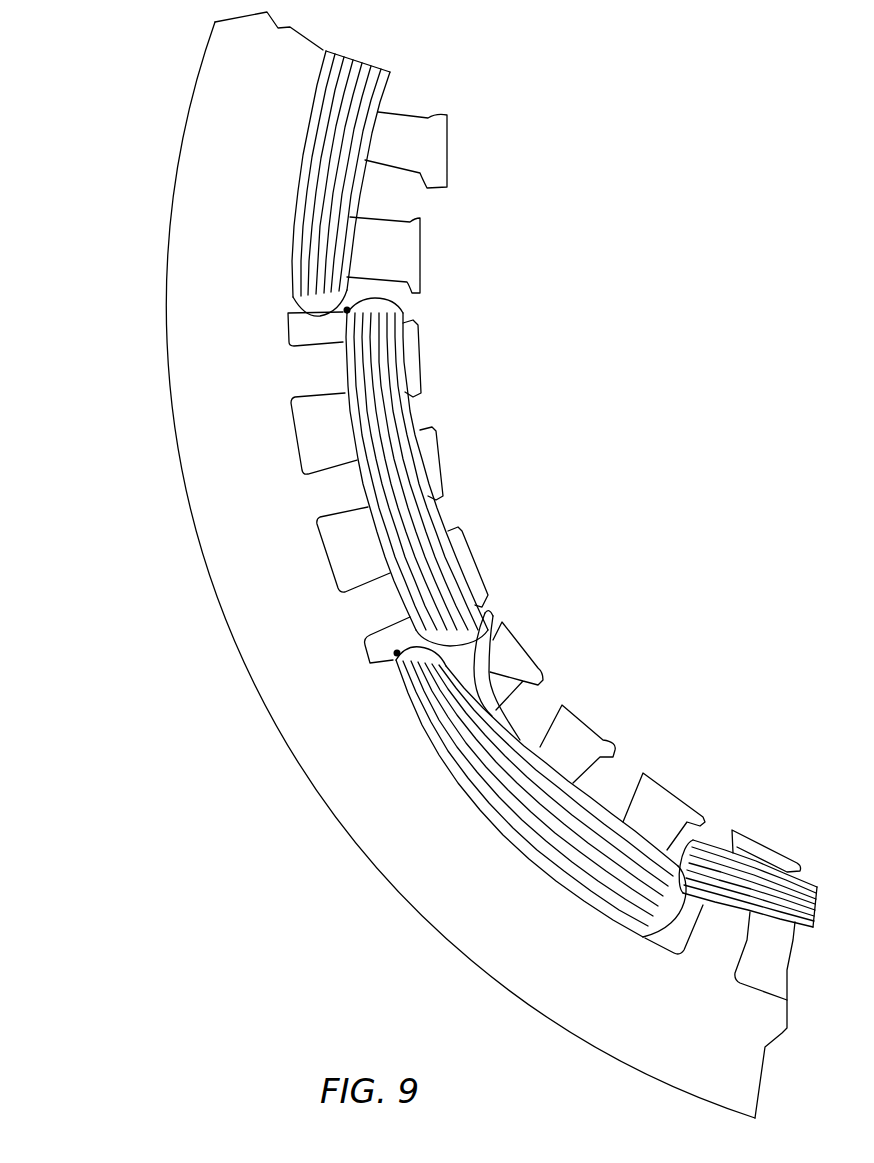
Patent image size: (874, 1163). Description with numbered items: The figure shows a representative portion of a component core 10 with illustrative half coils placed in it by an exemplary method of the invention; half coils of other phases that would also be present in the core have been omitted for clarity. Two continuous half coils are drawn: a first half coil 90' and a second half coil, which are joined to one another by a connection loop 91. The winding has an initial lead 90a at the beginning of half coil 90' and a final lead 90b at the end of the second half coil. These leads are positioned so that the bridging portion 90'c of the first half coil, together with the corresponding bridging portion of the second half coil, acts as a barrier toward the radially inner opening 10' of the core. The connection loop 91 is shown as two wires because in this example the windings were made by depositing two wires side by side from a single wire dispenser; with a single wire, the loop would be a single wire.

The component core 10 is at (458, 565).
The radially inner opening 10' is at (516, 570).
The initial lead 90a is at (347, 310).
The half coil 90' is at (426, 472).
The bridging portion 90'c is at (429, 471).
The connection loop 91 is at (540, 670).
The final lead 90b is at (397, 653).